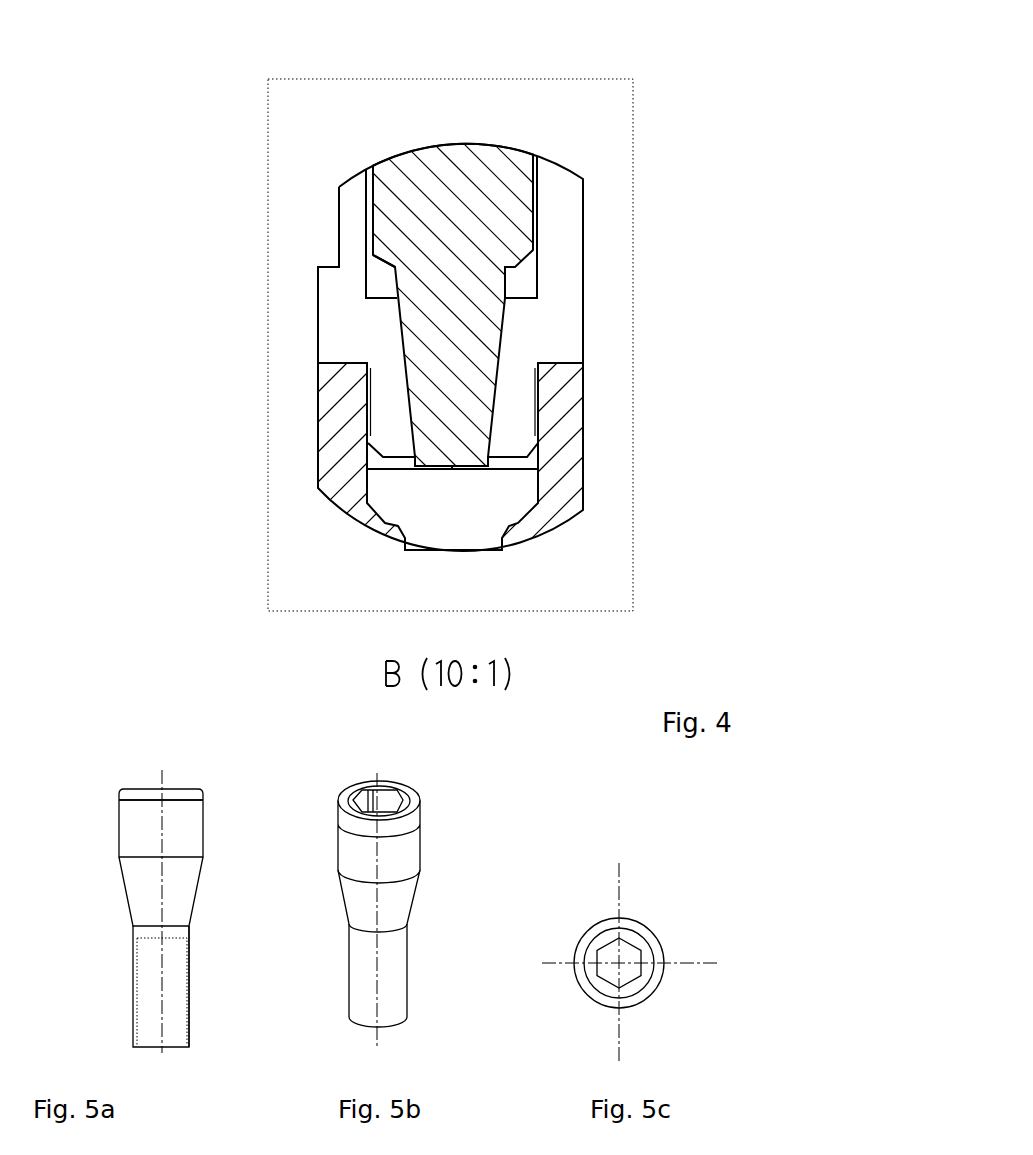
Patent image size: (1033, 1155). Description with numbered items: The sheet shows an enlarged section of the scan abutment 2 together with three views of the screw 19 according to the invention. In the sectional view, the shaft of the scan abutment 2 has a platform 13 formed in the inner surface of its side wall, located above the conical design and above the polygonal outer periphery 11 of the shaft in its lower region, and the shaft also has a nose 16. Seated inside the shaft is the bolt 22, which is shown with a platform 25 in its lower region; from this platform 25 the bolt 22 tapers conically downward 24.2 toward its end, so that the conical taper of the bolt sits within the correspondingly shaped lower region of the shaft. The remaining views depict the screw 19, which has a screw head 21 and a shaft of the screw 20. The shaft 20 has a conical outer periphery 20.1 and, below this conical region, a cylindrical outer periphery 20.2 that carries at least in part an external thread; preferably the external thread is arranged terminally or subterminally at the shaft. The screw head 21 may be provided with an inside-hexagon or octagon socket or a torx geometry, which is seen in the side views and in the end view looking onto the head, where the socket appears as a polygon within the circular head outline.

In FIG. 4, the scan abutment 2 is at (376, 320).
In FIG. 4, the polygonal outer periphery 11 is at (548, 397).
In FIG. 4, the platform 13 is at (541, 297).
In FIG. 4, the nose 16 is at (548, 435).
In FIG. 4, the bolt 22 is at (484, 165).
In FIG. 4, the platform 25 is at (393, 265).
In FIG. 4, the conical taper 24.2 is at (413, 363).
In FIG. 5A, the screw 19 is at (163, 774).
In FIG. 5A, the shaft of the screw 20 is at (148, 974).
In FIG. 5A, the conical outer periphery 20.1 is at (128, 889).
In FIG. 5B, the conical outer periphery 20.1 is at (336, 900).
In FIG. 5A, the cylindrical outer periphery 20.2 is at (190, 971).
In FIG. 5B, the cylindrical outer periphery 20.2 is at (388, 967).
In FIG. 5A, the screw head 21 is at (193, 823).
In FIG. 5B, the screw head 21 is at (393, 798).
In FIG. 5C, the screw head 21 is at (620, 956).